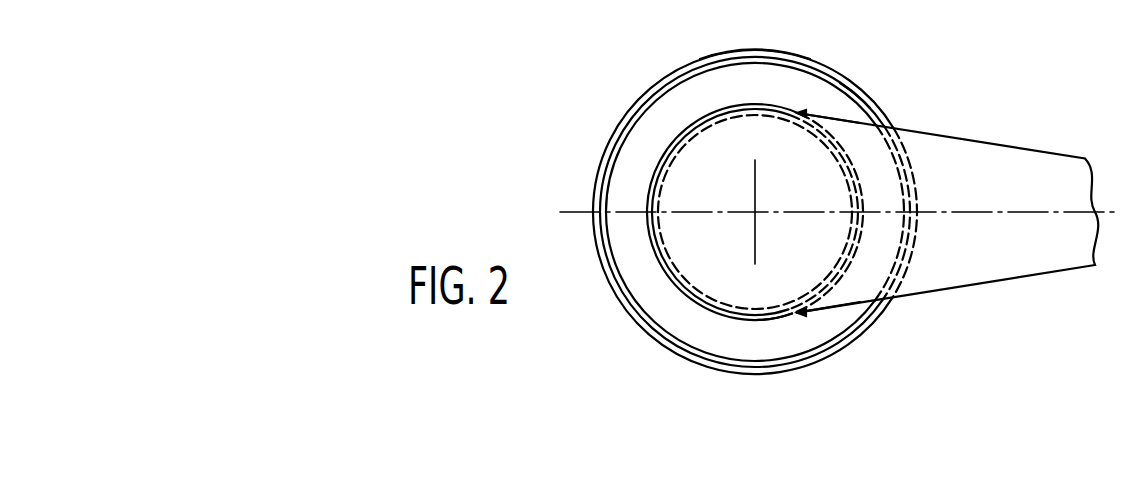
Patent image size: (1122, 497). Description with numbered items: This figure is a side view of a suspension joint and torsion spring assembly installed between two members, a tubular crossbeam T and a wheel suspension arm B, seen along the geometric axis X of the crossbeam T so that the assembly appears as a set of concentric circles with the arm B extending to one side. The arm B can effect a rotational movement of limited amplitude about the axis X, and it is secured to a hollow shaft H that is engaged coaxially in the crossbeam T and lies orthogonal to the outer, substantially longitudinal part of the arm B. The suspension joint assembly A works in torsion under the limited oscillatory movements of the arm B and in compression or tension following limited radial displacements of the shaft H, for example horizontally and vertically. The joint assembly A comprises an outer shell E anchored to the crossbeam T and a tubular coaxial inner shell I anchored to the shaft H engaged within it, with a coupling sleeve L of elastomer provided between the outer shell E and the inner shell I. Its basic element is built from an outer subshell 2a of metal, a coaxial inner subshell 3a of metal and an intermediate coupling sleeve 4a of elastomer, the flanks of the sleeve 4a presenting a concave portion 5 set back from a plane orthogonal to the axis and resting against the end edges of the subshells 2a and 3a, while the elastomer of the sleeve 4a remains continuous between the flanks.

The outer subshell 2a is at (617, 133).
The intermediate coupling sleeve 4a is at (658, 112).
The concave portion 5 is at (692, 90).
The inner subshell 3a is at (735, 100).
The tubular crossbeam T is at (768, 42).
The outer shell E is at (855, 81).
The coupling sleeve L is at (848, 110).
The wheel suspension arm B is at (1012, 160).
The hollow shaft H is at (660, 188).
The geometric axis X is at (750, 215).
The suspension joint assembly A is at (848, 316).
The inner shell I is at (782, 333).